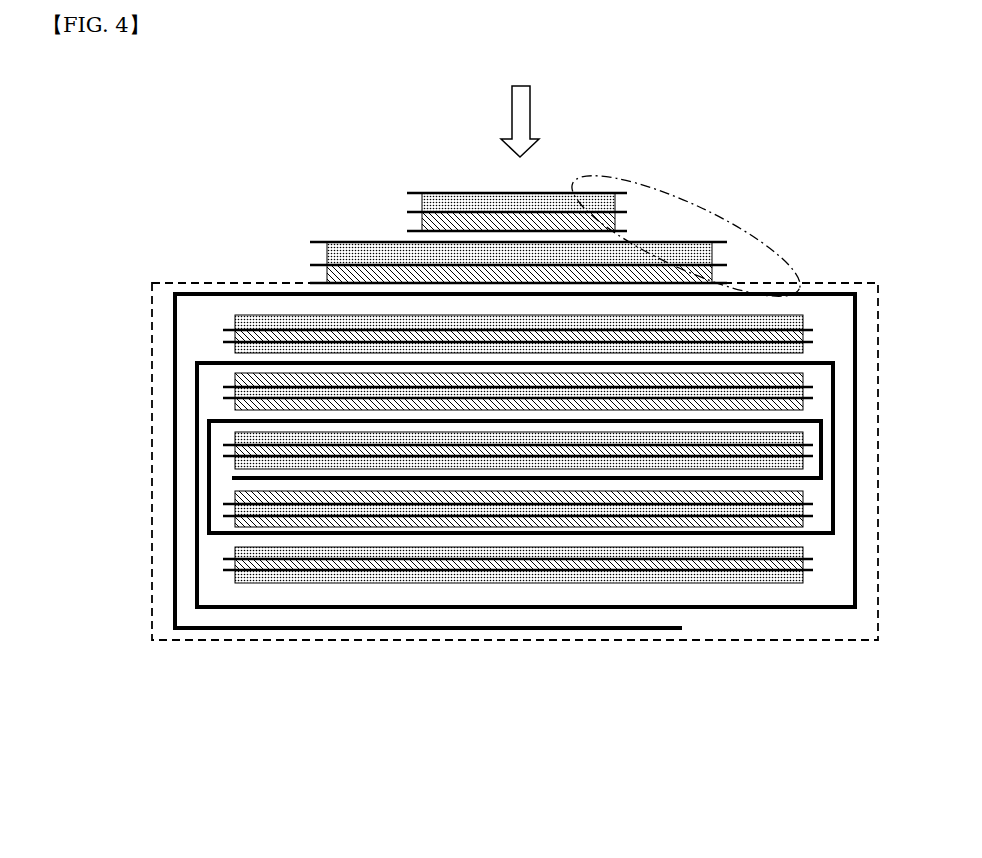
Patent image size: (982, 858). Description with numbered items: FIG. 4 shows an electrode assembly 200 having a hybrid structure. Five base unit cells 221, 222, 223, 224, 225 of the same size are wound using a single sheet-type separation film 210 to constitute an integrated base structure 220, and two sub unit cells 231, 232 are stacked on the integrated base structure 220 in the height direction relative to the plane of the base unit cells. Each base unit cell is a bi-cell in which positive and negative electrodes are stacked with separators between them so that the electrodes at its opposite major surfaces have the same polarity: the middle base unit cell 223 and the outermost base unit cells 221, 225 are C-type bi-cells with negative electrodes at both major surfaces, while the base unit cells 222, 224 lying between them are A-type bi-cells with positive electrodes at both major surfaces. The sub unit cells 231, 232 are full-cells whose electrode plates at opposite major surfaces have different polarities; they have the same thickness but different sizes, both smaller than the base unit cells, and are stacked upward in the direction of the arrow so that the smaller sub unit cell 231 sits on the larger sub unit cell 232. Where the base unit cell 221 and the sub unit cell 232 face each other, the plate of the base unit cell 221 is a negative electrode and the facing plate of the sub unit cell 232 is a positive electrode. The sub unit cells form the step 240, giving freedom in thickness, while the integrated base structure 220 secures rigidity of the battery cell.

The electrode assembly 200 is at (146, 133).
The sheet-type separation film 210 is at (690, 636).
The integrated base structure 220 is at (195, 651).
The base unit cell 221 is at (205, 313).
The base unit cell 222 is at (205, 372).
The middle base unit cell 223 is at (205, 428).
The base unit cell 224 is at (205, 486).
The base unit cell 225 is at (205, 544).
The sub unit cell 231 is at (376, 197).
The sub unit cell 232 is at (280, 244).
The step 240 is at (695, 194).